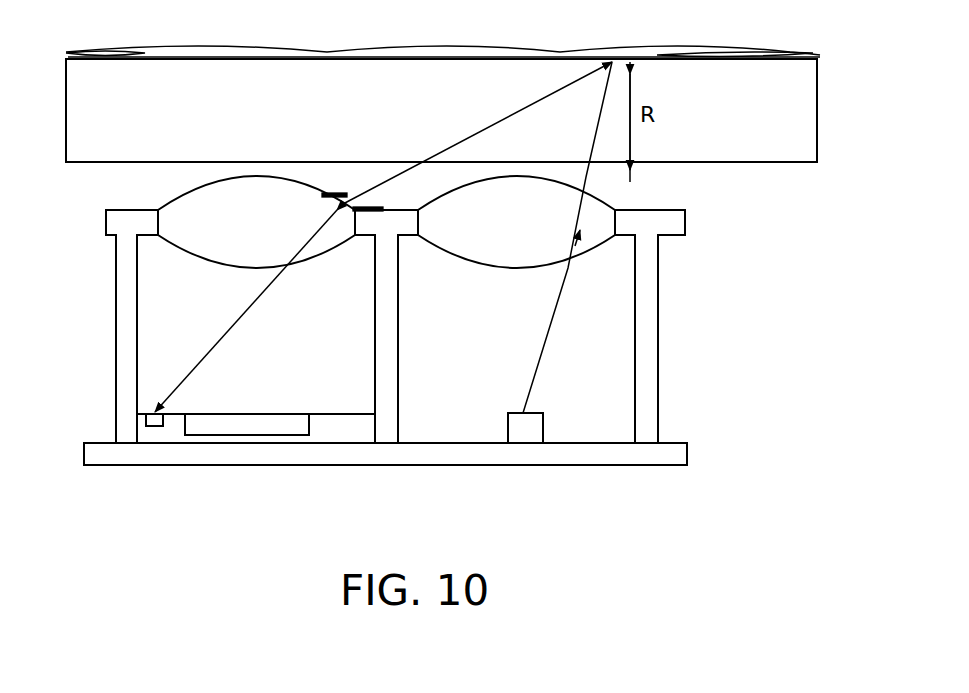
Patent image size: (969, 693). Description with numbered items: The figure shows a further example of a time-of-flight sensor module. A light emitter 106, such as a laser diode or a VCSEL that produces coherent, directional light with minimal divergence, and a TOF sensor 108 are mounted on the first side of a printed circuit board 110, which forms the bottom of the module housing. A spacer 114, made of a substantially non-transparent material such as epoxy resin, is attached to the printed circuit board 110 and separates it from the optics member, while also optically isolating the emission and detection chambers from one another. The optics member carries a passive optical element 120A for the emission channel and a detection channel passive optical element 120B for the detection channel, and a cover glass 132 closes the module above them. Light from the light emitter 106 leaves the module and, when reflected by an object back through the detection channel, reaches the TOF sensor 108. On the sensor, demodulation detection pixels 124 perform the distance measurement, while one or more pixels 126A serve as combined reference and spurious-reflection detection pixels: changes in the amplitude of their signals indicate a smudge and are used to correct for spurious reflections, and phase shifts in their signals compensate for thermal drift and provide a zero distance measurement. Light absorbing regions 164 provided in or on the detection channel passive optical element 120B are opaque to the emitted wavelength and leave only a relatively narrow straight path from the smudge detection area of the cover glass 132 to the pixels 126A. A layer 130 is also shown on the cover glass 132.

The light emitter 106 is at (543, 430).
The TOF sensor 108 is at (342, 435).
The printed circuit board 110 is at (687, 457).
The spacer 114 is at (115, 366).
The passive optical element 120A is at (593, 252).
The detection channel passive optical element 120B is at (200, 255).
The demodulation detection pixels 124 is at (250, 418).
The combined reference and spurious-reflection detection pixels 126A is at (153, 427).
The optical coating layer 130 is at (678, 50).
The cover glass 132 is at (812, 102).
The light absorbing regions 164 is at (380, 207).